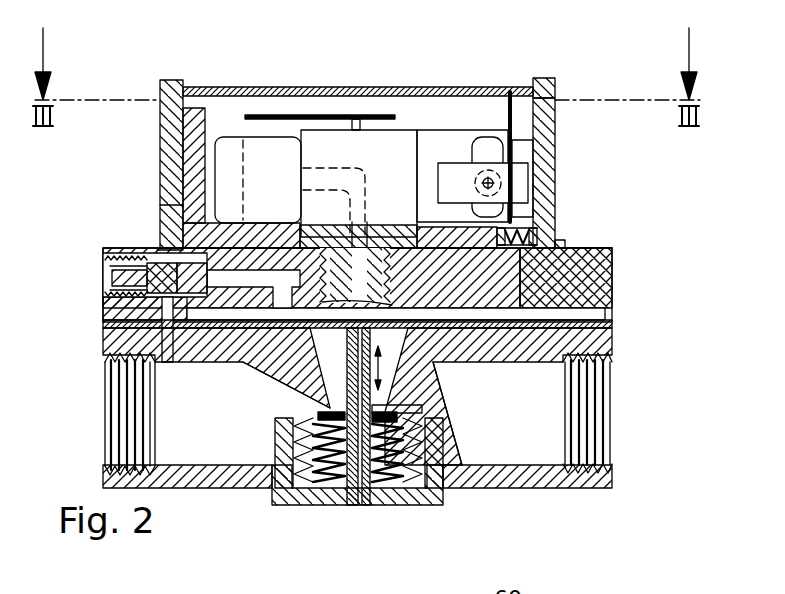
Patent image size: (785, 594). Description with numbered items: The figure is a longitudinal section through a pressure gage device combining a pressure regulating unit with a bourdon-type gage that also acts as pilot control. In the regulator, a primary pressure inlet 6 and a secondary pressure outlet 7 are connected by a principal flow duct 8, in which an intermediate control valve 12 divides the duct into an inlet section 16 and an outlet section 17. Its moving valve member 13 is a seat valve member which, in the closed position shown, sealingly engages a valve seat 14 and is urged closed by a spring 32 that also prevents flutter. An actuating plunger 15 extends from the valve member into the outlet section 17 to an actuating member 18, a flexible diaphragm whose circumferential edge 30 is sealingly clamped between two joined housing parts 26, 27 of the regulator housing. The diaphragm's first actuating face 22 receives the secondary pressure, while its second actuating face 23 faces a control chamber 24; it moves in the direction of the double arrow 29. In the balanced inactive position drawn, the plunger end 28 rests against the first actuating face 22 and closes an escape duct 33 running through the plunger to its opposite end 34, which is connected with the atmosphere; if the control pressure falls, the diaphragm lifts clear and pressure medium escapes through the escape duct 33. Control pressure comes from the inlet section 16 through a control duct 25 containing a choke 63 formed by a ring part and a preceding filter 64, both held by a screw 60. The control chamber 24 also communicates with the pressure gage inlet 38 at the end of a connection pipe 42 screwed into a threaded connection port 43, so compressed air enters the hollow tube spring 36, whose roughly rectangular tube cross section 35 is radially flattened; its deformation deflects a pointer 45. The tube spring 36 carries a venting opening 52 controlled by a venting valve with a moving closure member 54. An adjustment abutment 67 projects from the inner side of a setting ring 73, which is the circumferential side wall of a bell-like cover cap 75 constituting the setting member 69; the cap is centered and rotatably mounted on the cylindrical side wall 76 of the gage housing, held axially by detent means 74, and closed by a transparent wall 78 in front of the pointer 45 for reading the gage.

The primary pressure inlet 6 is at (165, 437).
The secondary pressure outlet 7 is at (550, 417).
The principal flow duct 8 is at (224, 465).
The intermediate control valve 12 is at (440, 410).
The moving valve member 13 is at (423, 435).
The valve seat 14 is at (323, 408).
The actuating plunger 15 is at (378, 487).
The inlet section 16 is at (180, 407).
The outlet section 17 is at (547, 380).
The actuating member 18 is at (580, 297).
The first actuating face 22 is at (563, 337).
The second actuating face 23 is at (602, 246).
The control chamber 24 is at (560, 246).
The control duct 25 is at (103, 313).
The housing part 26 is at (592, 270).
The housing part 27 is at (600, 480).
The plunger end 28 is at (247, 368).
The double arrow 29 is at (382, 360).
The circumferential edge 30 is at (613, 308).
The spring 32 is at (290, 440).
The escape duct 33 is at (335, 487).
The opposite end 34 is at (350, 505).
The tube cross section 35 is at (233, 140).
The tube spring 36 is at (275, 140).
The pressure gage inlet 38 is at (282, 236).
The connection pipe 42 is at (380, 233).
The connection port 43 is at (322, 234).
The pointer 45 is at (308, 113).
The venting opening 52 is at (492, 163).
The moving closure member 54 is at (468, 163).
The screw 60 is at (103, 282).
The choke 63 is at (163, 206).
The filter 64 is at (158, 251).
The adjustment abutment 67 is at (527, 150).
The setting member 69 is at (545, 85).
The setting ring 73 is at (547, 118).
The detent means 74 is at (538, 227).
The cover cap 75 is at (172, 88).
The cylindrical side wall 76 is at (193, 135).
The transparent wall 78 is at (227, 88).